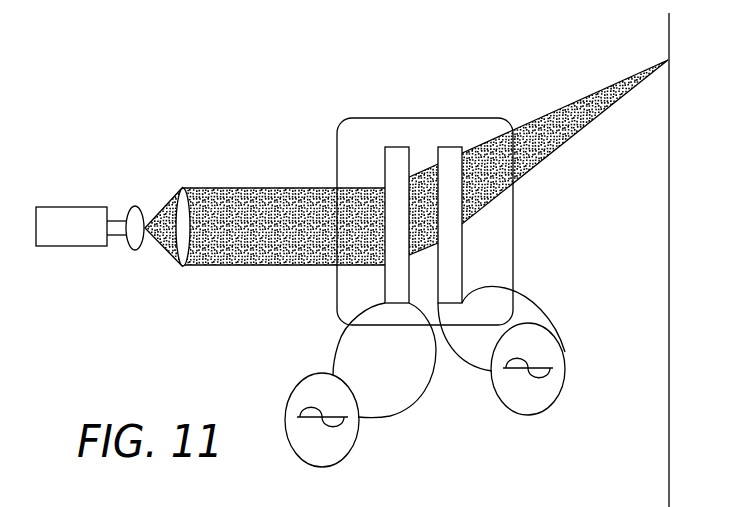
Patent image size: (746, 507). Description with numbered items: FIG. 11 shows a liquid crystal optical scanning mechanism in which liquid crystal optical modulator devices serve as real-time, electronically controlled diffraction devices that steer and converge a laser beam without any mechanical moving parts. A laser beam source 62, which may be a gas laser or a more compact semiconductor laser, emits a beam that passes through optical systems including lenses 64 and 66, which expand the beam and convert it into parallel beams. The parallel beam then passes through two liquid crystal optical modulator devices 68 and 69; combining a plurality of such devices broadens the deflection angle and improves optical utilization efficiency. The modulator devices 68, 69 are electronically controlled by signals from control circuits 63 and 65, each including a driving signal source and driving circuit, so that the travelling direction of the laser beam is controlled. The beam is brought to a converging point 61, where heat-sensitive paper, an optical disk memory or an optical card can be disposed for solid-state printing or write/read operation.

The converging point of the beam 61 is at (668, 59).
The laser beam source 62 is at (65, 207).
The optical system including lens 64 is at (132, 207).
The optical system including lens 66 is at (182, 188).
The liquid crystal optical modulator device 68 is at (395, 147).
The liquid crystal optical modulator device 69 is at (448, 147).
The control circuit 63 is at (350, 452).
The control circuit 65 is at (533, 415).